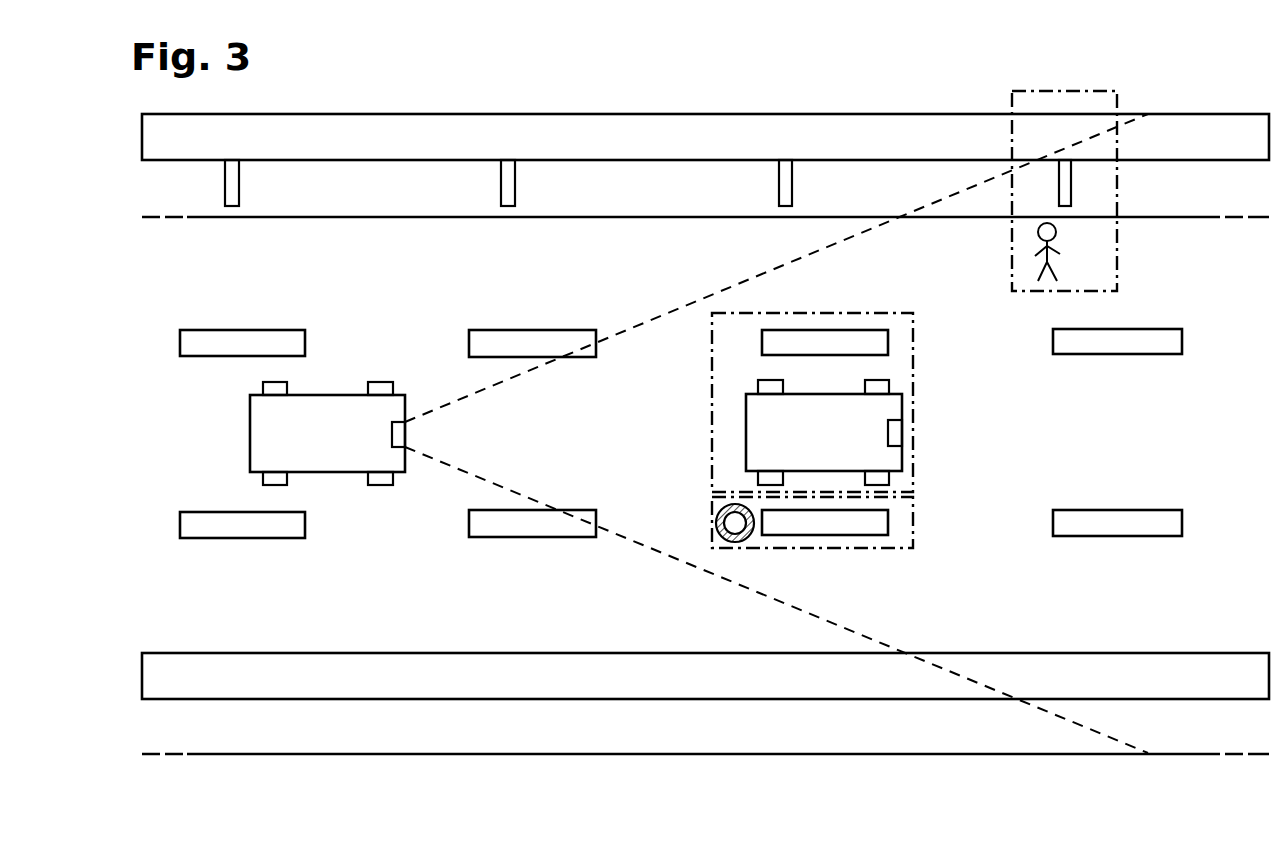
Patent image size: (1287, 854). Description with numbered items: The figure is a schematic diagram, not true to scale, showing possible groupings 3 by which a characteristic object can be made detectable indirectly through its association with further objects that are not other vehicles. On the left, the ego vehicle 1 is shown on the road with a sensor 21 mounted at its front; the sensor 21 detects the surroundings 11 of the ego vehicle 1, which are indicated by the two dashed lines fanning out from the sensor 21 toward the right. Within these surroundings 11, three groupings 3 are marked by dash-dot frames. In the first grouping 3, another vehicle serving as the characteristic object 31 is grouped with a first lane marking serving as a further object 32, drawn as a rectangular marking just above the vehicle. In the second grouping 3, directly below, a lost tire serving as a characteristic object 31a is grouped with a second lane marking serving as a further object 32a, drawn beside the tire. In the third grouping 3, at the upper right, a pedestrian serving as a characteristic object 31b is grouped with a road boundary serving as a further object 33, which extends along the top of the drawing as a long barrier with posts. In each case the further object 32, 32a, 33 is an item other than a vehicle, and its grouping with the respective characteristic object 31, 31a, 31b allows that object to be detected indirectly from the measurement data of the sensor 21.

The ego vehicle 1 is at (250, 430).
The sensor 21 is at (405, 432).
The surroundings 11 is at (640, 358).
The grouping 3 is at (1117, 283).
The characteristic object 31 is at (836, 447).
The characteristic object 31a is at (733, 543).
The characteristic object 31b is at (1050, 248).
The further object 32 is at (888, 340).
The further object 32a is at (808, 535).
The further object 33 is at (1160, 160).